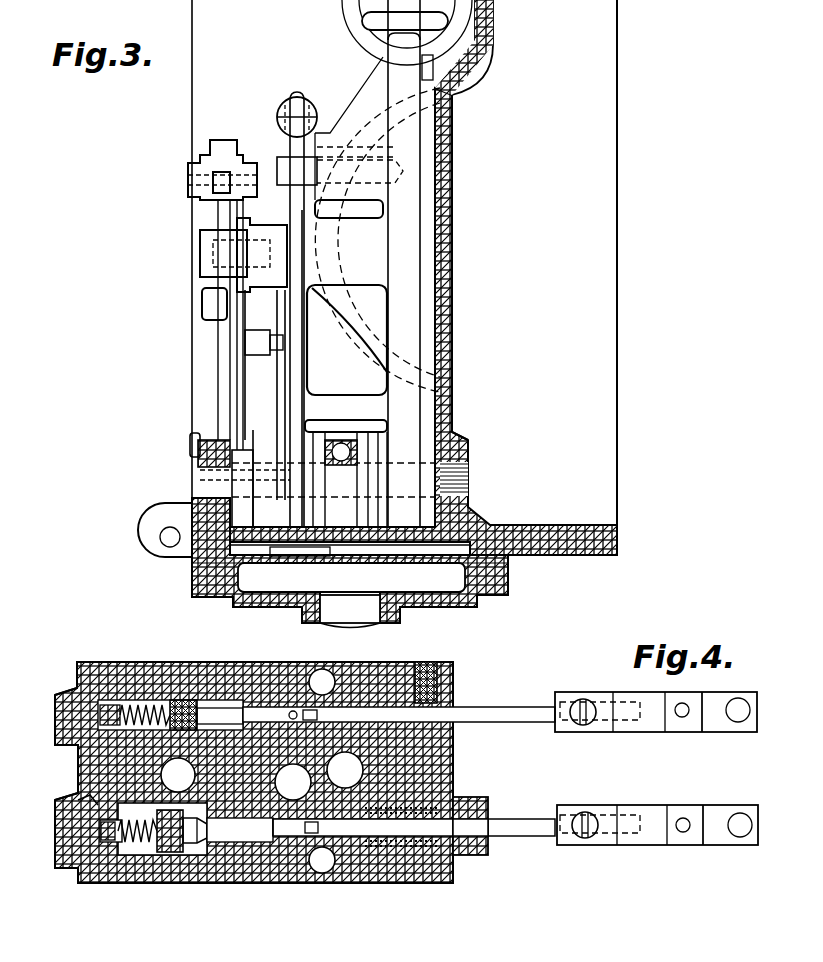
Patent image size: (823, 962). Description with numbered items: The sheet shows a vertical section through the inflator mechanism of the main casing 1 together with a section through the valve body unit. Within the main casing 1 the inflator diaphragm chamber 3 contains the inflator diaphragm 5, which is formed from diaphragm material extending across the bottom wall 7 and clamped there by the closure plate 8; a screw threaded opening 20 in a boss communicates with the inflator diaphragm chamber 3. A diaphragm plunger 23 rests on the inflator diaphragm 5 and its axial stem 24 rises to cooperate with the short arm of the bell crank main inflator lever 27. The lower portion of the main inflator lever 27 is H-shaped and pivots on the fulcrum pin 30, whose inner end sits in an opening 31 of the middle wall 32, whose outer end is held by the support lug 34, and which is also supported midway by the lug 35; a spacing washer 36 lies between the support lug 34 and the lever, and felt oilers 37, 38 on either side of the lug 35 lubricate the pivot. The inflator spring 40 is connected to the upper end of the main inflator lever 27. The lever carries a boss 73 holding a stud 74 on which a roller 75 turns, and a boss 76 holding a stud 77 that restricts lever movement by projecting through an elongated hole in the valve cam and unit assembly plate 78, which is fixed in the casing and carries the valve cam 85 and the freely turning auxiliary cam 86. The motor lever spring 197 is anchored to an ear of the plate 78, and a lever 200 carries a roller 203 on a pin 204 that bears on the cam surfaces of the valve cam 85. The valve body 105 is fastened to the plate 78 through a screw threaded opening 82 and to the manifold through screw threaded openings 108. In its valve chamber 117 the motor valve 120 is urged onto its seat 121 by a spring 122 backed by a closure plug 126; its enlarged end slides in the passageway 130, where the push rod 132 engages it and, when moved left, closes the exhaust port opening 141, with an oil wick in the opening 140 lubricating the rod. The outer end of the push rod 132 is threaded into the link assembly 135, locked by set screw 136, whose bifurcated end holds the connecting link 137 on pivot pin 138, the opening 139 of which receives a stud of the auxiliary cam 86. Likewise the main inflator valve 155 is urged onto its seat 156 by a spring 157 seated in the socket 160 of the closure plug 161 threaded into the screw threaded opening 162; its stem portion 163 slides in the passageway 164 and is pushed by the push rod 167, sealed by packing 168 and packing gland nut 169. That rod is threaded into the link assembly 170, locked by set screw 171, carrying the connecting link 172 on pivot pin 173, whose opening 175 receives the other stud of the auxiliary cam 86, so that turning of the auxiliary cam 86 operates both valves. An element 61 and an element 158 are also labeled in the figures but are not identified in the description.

In FIG. 3, the main casing 1 is at (610, 378).
In FIG. 3, the inflator diaphragm chamber 3 is at (351, 577).
In FIG. 3, the inflator diaphragm 5 is at (426, 571).
In FIG. 3, the bottom wall 7 is at (537, 525).
In FIG. 3, the closure plate 8 is at (507, 583).
In FIG. 3, the screw threaded opening 20 is at (400, 624).
In FIG. 3, the diaphragm plunger 23 is at (303, 556).
In FIG. 3, the axial stem 24 is at (352, 537).
In FIG. 3, the main inflator lever 27 is at (420, 258).
In FIG. 3, the fulcrum pin 30 is at (455, 441).
In FIG. 3, the opening 31 is at (468, 463).
In FIG. 3, the middle wall 32 is at (449, 334).
In FIG. 3, the support lug 34 is at (196, 500).
In FIG. 3, the lug 35 is at (343, 447).
In FIG. 3, the spacing washer 36 is at (190, 545).
In FIG. 3, the felt oiler 37 is at (318, 450).
In FIG. 3, the felt oiler 38 is at (367, 451).
In FIG. 3, the inflator spring 40 is at (346, 14).
In FIG. 3, the cam slot 61 is at (342, 320).
In FIG. 3, the boss 73 is at (263, 253).
In FIG. 3, the stud 74 is at (264, 240).
In FIG. 3, the roller 75 is at (207, 279).
In FIG. 3, the boss 76 is at (330, 132).
In FIG. 3, the stud 77 is at (282, 170).
In FIG. 3, the valve cam and unit assembly plate 78 is at (307, 99).
In FIG. 3, the valve cam 85 is at (222, 213).
In FIG. 3, the auxiliary cam 86 is at (240, 372).
In FIG. 3, the connecting link 172 is at (263, 358).
In FIG. 4, the connecting link 172 is at (718, 836).
In FIG. 3, the motor lever spring 197 is at (280, 108).
In FIG. 3, the lever 200 is at (222, 147).
In FIG. 3, the roller 203 is at (213, 184).
In FIG. 3, the pin 204 is at (200, 175).
In FIG. 4, the screw threaded opening 82 is at (313, 836).
In FIG. 4, the valve body 105 is at (165, 665).
In FIG. 4, the screw threaded openings 108 is at (178, 775).
In FIG. 4, the valve chamber 117 is at (121, 703).
In FIG. 4, the motor valve 120 is at (190, 702).
In FIG. 4, the seat 121 is at (203, 706).
In FIG. 4, the spring 122 is at (115, 702).
In FIG. 4, the closure plug 126 is at (57, 735).
In FIG. 4, the passageway 130 is at (420, 723).
In FIG. 4, the push rod 132 is at (498, 708).
In FIG. 4, the link assembly 135 is at (605, 700).
In FIG. 4, the set screw 136 is at (590, 718).
In FIG. 4, the connecting link 137 is at (713, 726).
In FIG. 4, the pivot pin 138 is at (682, 718).
In FIG. 4, the opening 139 is at (744, 716).
In FIG. 4, the opening 140 is at (440, 673).
In FIG. 4, the exhaust port opening 141 is at (292, 708).
In FIG. 4, the main inflator valve 155 is at (192, 845).
In FIG. 4, the seat 156 is at (203, 845).
In FIG. 4, the spring 157 is at (140, 846).
In FIG. 4, the piston 158 is at (170, 853).
In FIG. 4, the socket 160 is at (112, 845).
In FIG. 4, the closure plug 161 is at (67, 869).
In FIG. 4, the screw threaded opening 162 is at (92, 878).
In FIG. 4, the stem portion 163 is at (259, 843).
In FIG. 4, the passageway 164 is at (268, 843).
In FIG. 4, the push rod 167 is at (362, 837).
In FIG. 4, the packing 168 is at (410, 848).
In FIG. 4, the packing gland nut 169 is at (480, 856).
In FIG. 4, the link assembly 170 is at (645, 807).
In FIG. 4, the set screw 171 is at (591, 832).
In FIG. 4, the pivot pin 173 is at (683, 833).
In FIG. 4, the opening 175 is at (745, 832).